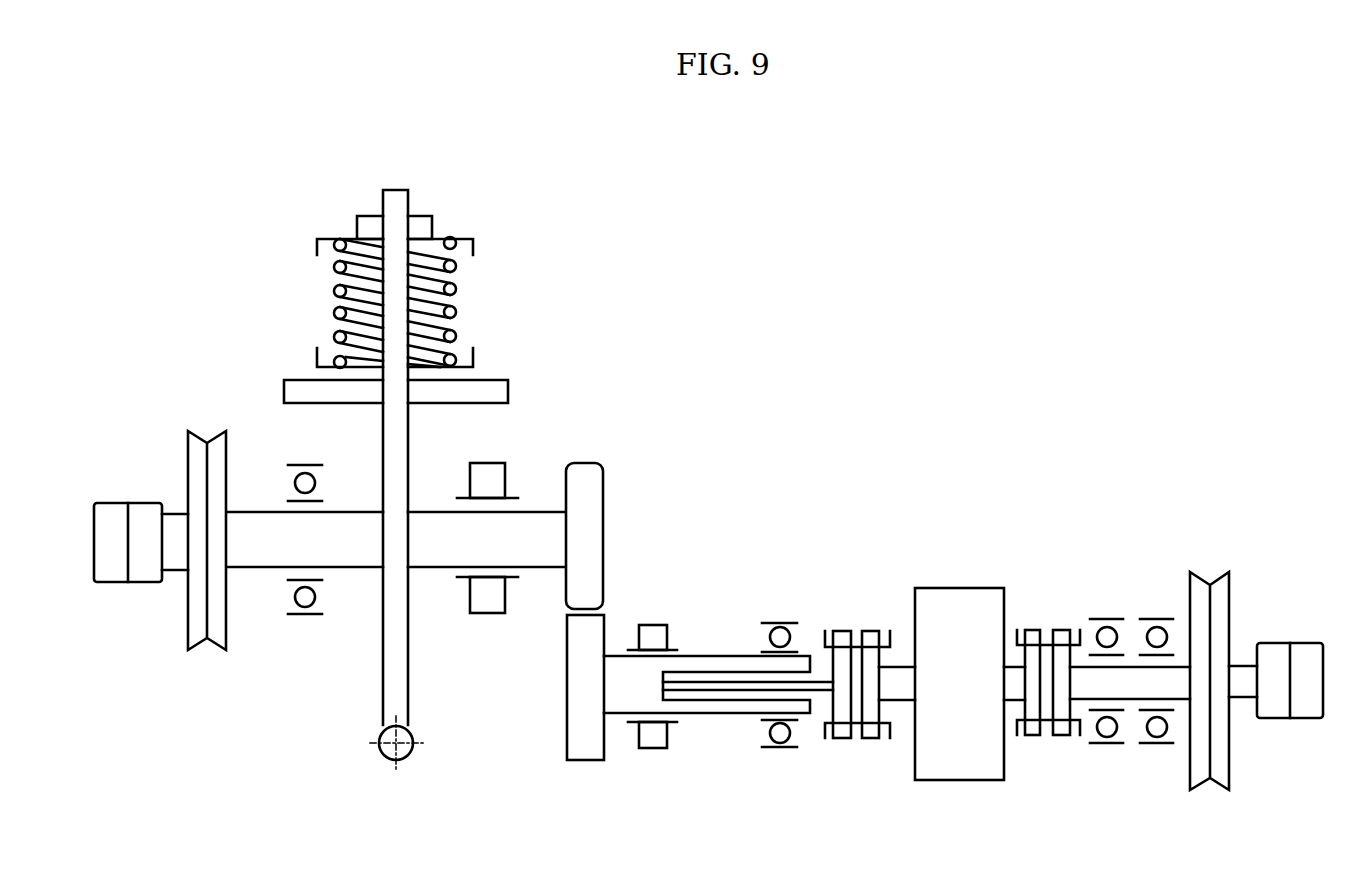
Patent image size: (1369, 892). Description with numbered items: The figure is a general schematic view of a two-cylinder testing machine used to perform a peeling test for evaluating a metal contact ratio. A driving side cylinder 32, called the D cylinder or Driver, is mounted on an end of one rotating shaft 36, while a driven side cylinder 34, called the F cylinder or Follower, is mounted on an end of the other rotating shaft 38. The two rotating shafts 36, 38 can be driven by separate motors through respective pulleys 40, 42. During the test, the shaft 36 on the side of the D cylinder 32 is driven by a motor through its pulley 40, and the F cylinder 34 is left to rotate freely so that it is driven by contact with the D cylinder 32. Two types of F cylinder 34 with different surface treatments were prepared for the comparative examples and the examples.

The driving side cylinder 32 is at (592, 490).
The driven side cylinder 34 is at (578, 718).
The rotating shaft 36 is at (537, 520).
The rotating shaft 38 is at (717, 708).
The pulley 40 is at (193, 459).
The pulley 42 is at (1197, 771).